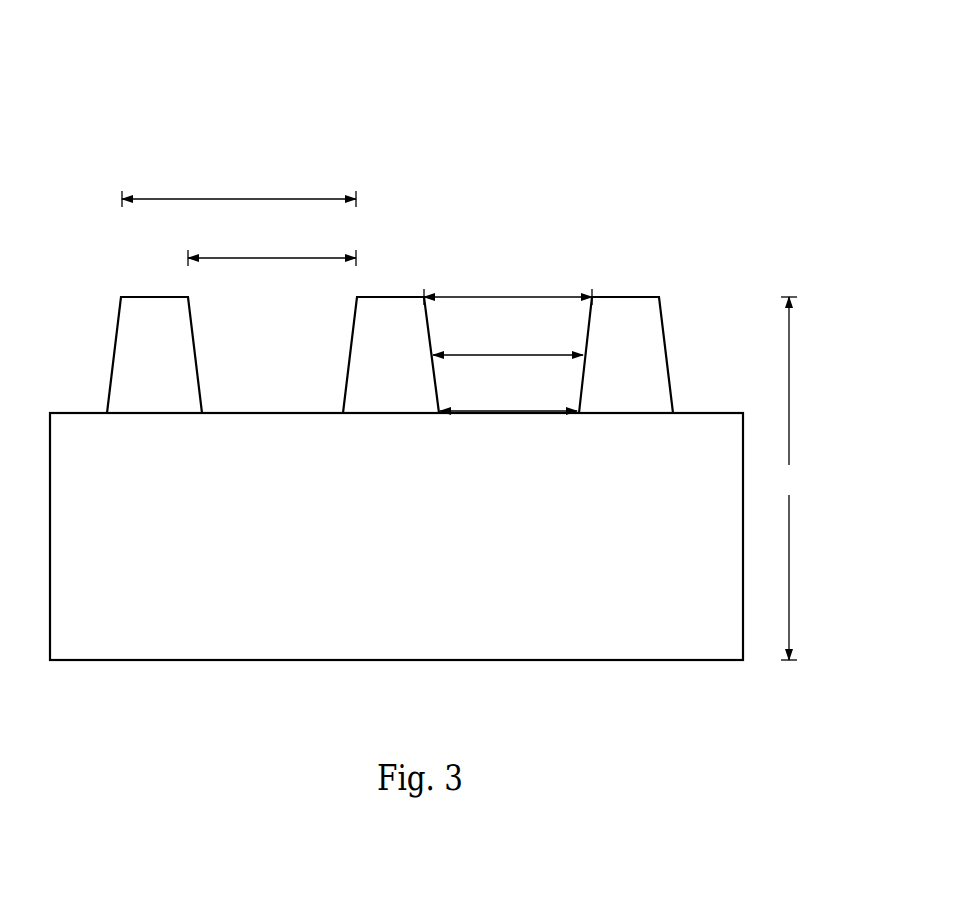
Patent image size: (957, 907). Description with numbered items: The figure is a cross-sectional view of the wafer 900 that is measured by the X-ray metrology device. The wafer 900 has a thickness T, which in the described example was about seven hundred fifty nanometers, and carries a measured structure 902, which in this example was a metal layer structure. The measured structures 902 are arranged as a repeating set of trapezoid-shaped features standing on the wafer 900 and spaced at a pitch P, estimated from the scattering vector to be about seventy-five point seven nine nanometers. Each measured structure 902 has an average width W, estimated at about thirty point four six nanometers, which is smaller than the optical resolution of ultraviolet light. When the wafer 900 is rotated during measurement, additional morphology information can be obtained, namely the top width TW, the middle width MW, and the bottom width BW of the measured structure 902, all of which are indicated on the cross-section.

The wafer 900 is at (103, 92).
The measured structure 902 is at (636, 335).
The pitch P is at (239, 189).
The average width W is at (272, 248).
The top width TW is at (508, 287).
The middle width MW is at (508, 341).
The bottom width BW is at (508, 397).
The thickness T is at (789, 478).